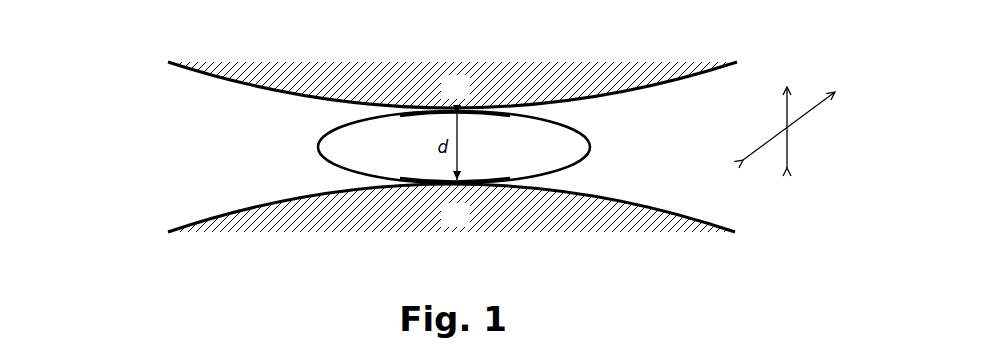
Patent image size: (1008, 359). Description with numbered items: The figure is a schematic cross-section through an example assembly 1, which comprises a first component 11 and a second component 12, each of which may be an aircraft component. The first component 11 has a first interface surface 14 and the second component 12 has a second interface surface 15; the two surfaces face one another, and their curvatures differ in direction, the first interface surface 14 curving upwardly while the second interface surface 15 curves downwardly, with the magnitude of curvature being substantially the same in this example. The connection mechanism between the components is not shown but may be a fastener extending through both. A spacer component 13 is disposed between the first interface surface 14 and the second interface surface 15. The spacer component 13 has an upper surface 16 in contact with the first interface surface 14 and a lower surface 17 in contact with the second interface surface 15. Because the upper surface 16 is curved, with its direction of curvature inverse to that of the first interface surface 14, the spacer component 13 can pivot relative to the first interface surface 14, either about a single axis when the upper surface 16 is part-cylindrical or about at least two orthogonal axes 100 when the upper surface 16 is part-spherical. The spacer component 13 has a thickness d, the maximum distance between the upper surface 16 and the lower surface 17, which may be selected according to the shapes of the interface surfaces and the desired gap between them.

The assembly 1 is at (100, 27).
The first component 11 is at (465, 96).
The second component 12 is at (465, 224).
The spacer component 13 is at (527, 157).
The first interface surface 14 is at (540, 106).
The second interface surface 15 is at (410, 181).
The upper surface 16 is at (529, 112).
The lower surface 17 is at (413, 185).
The orthogonal axes 100 is at (815, 132).